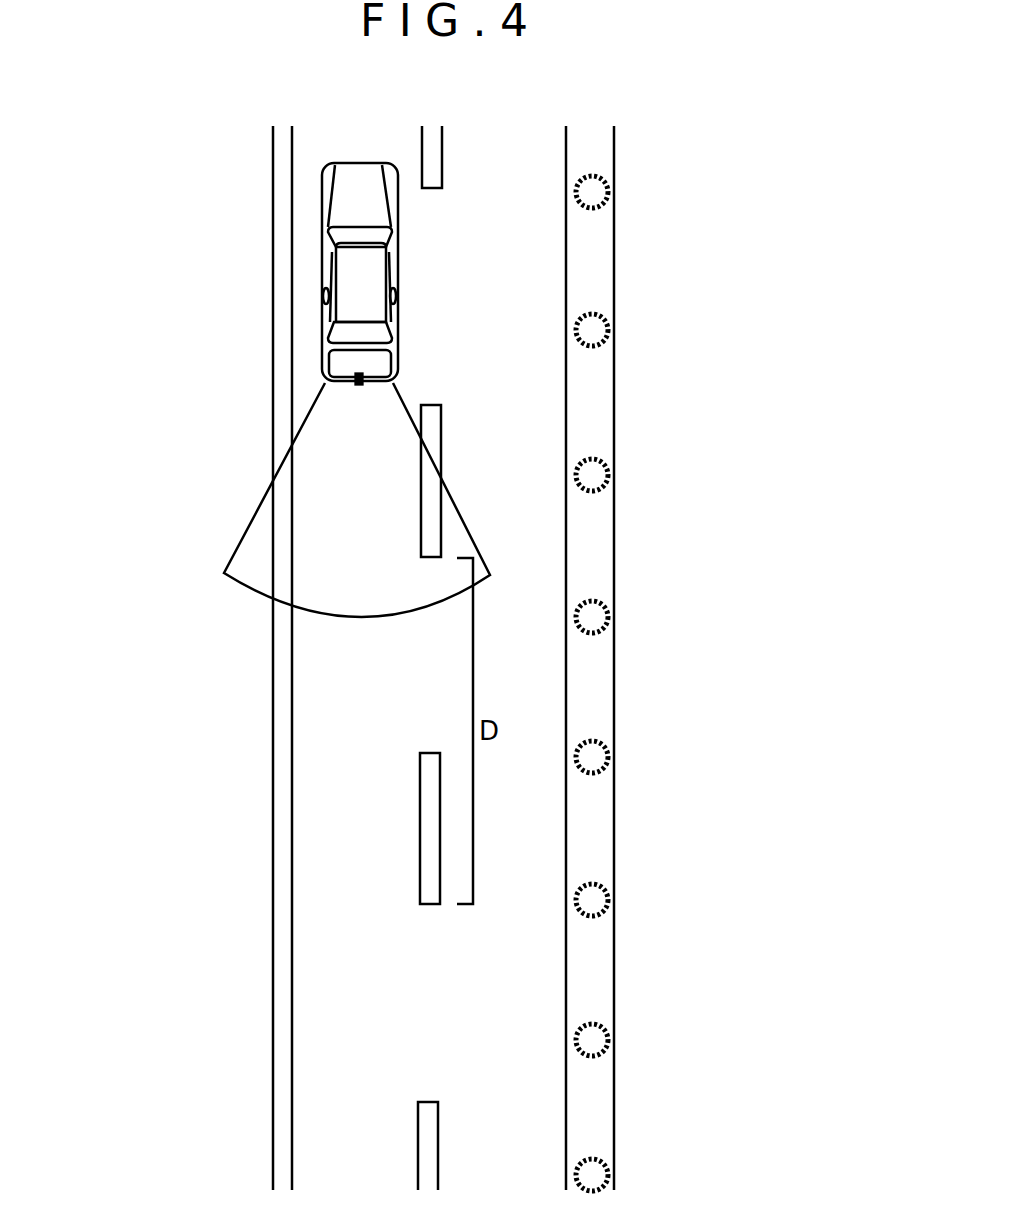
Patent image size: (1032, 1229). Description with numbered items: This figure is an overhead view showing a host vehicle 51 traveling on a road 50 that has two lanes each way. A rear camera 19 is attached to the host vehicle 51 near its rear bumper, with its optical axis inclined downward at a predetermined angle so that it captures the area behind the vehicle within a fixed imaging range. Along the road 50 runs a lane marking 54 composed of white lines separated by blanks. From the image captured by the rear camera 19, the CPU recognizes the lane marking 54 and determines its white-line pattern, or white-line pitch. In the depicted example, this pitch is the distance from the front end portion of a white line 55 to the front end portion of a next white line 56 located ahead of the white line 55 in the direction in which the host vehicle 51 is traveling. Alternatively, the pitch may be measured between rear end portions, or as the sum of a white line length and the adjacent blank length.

The rear camera 19 is at (330, 383).
The road 50 is at (446, 1020).
The host vehicle 51 is at (360, 278).
The lane marking 54 is at (457, 1120).
The white line 55 is at (431, 800).
The next white line 56 is at (431, 425).